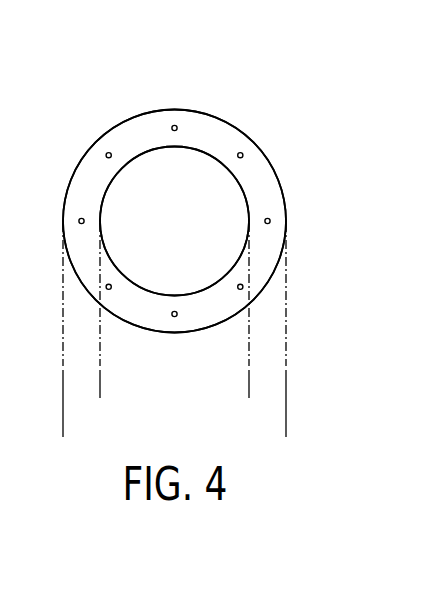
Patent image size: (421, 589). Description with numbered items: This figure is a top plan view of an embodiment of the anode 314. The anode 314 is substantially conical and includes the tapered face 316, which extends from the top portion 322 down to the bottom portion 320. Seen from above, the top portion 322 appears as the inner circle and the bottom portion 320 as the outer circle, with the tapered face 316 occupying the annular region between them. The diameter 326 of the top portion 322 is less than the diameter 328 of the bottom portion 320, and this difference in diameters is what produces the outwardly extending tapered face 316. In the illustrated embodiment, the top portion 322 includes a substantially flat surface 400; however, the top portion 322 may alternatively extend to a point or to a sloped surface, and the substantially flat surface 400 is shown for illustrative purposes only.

The anode 314 is at (302, 93).
The tapered face 316 is at (285, 172).
The bottom portion 320 is at (115, 117).
The top portion 322 is at (140, 296).
The substantially flat surface 400 is at (153, 236).
The diameter of the top portion 326 is at (100, 388).
The diameter of the bottom portion 328 is at (63, 426).